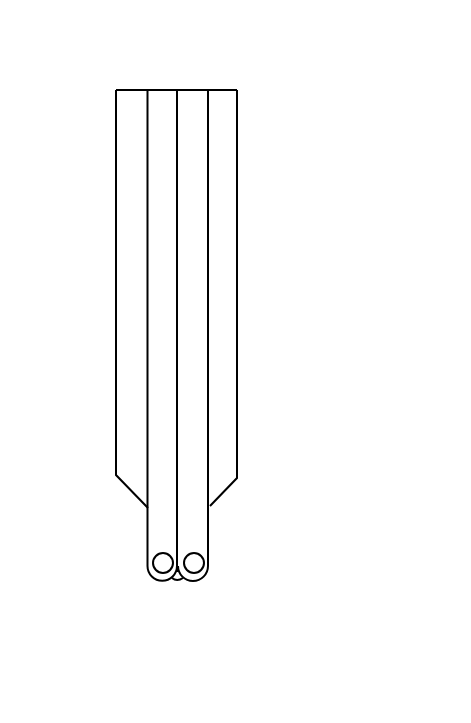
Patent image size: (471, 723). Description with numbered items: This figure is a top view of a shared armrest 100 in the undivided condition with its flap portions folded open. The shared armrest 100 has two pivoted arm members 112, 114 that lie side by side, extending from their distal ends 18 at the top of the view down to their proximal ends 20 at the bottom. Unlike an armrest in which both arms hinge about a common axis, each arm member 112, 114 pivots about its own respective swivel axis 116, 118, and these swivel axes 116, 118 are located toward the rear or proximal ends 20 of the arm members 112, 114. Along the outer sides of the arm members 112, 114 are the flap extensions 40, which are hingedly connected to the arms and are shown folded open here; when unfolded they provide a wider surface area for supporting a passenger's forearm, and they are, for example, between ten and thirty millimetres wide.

The shared armrest 100 is at (73, 199).
The distal end 18 is at (178, 90).
The flap extension 40 is at (127, 265).
The arm member 112 is at (200, 290).
The arm member 114 is at (158, 340).
The swivel axis 116 is at (210, 573).
The swivel axis 118 is at (162, 575).
The proximal end 20 is at (186, 587).